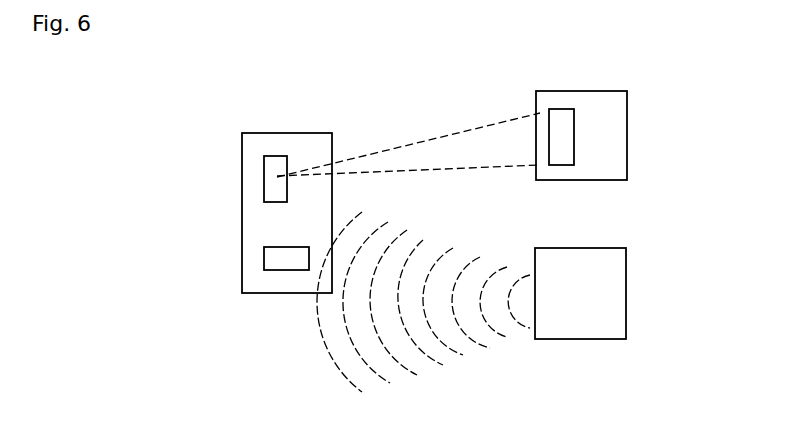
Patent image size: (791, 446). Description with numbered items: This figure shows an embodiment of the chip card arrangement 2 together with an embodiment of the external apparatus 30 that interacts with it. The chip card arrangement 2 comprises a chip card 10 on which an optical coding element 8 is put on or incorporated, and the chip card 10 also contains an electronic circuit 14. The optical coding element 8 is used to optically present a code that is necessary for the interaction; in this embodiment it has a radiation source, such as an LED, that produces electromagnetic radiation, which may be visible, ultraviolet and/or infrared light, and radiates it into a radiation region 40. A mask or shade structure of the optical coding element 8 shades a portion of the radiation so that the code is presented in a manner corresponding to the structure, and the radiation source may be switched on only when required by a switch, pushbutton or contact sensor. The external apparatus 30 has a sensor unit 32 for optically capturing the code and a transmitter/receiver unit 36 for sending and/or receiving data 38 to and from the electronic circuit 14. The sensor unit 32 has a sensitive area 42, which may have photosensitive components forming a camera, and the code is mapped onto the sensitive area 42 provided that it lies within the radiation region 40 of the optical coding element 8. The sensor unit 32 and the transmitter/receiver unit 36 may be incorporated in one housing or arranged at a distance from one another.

The chip card arrangement 2 is at (336, 106).
The optical coding element 8 is at (277, 176).
The chip card 10 is at (290, 133).
The electronic circuit 14 is at (284, 270).
The external apparatus 30 is at (682, 220).
The sensor unit 32 is at (627, 140).
The transmitter/receiver unit 36 is at (627, 315).
The data 38 is at (460, 392).
The radiation region 40 is at (460, 130).
The sensitive area 42 is at (566, 109).